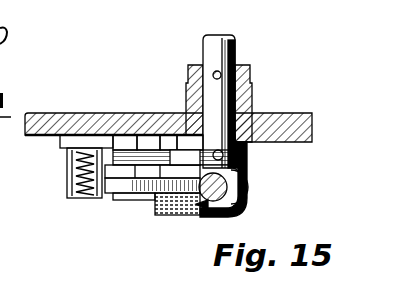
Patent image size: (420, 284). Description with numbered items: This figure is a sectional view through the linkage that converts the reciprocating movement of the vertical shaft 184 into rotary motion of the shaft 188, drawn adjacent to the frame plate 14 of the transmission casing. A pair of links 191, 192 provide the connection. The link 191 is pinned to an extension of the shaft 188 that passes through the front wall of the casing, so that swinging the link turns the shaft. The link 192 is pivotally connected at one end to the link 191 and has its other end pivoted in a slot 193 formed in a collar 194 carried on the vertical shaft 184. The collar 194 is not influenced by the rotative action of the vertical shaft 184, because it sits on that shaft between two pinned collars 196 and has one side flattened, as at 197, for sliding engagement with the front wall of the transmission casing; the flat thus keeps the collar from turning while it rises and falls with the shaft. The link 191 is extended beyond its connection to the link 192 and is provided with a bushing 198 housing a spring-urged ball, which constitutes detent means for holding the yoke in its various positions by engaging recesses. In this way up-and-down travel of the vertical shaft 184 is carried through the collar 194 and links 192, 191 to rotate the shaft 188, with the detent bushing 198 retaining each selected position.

The frame plate 14 is at (160, 103).
The vertical shaft 184 is at (247, 182).
The shaft 188 is at (217, 57).
The link 191 is at (146, 111).
The link 192 is at (143, 198).
The slot 193 is at (192, 216).
The collar 194 is at (185, 218).
The pinned collars 196 is at (238, 199).
The flattened side 197 is at (173, 134).
The bushing 198 is at (67, 182).